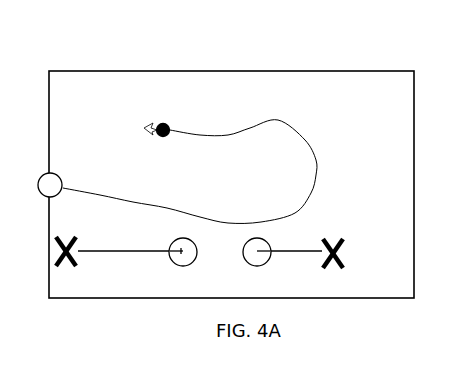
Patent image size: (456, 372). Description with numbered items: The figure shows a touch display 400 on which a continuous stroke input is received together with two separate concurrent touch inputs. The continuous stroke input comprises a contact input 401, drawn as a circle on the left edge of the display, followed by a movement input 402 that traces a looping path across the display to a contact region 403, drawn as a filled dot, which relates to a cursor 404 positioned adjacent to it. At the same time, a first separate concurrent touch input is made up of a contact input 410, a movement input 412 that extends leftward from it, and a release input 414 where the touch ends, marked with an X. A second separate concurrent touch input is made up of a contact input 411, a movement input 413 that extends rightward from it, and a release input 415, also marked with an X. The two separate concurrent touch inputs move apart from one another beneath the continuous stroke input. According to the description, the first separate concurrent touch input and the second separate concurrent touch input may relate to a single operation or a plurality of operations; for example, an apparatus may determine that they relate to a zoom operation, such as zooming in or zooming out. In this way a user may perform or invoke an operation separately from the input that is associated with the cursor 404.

The touch display 400 is at (362, 62).
The contact input 401 is at (38, 188).
The movement input 402 is at (209, 172).
The contact region 403 is at (168, 142).
The cursor 404 is at (157, 114).
The contact input 410 is at (183, 261).
The contact input 411 is at (255, 261).
The movement input 412 is at (130, 241).
The movement input 413 is at (289, 241).
The release input 414 is at (69, 263).
The release input 415 is at (337, 264).